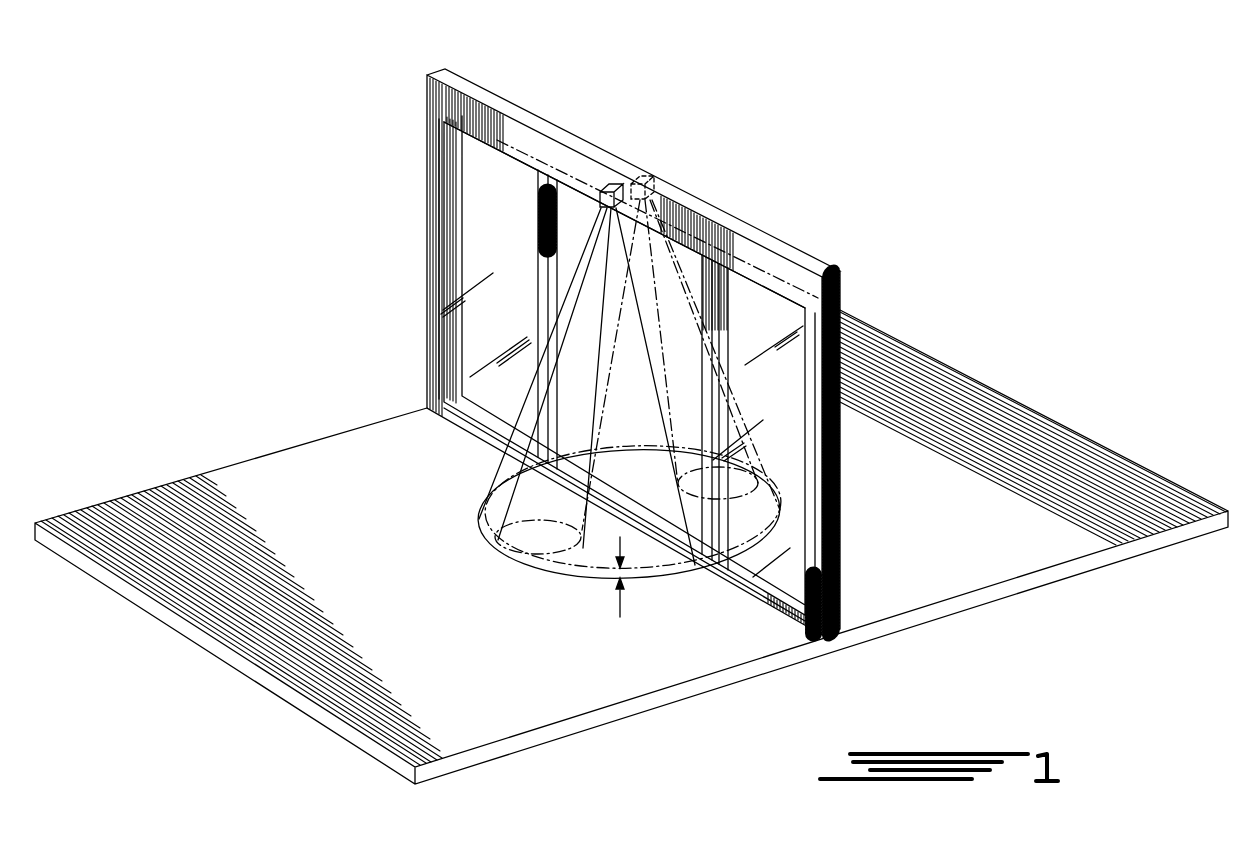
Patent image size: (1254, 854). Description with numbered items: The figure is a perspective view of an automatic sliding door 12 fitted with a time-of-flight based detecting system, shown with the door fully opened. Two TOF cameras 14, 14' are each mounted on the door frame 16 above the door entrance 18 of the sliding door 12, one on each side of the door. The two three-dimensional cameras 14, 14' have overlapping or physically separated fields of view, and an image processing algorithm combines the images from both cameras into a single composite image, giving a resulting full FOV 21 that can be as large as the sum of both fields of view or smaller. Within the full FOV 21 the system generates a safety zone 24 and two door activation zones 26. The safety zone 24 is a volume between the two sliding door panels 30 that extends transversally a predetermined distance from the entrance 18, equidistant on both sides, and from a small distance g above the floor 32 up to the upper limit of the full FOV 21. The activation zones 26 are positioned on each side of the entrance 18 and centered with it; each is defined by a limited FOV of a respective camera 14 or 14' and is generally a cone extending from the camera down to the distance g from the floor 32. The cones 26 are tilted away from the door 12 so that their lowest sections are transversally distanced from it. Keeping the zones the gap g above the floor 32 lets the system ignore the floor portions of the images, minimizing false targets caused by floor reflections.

The automatic sliding door 12 is at (818, 244).
The TOF camera 14 is at (619, 146).
The TOF camera 14' is at (666, 153).
The door frame 16 is at (490, 108).
The door entrance 18 is at (577, 223).
The full FOV 21 is at (485, 462).
The safety zone 24 is at (657, 530).
The door activation zone 26 is at (533, 537).
The sliding door panel 30 is at (550, 197).
The floor 32 is at (220, 497).
The distance g is at (618, 577).